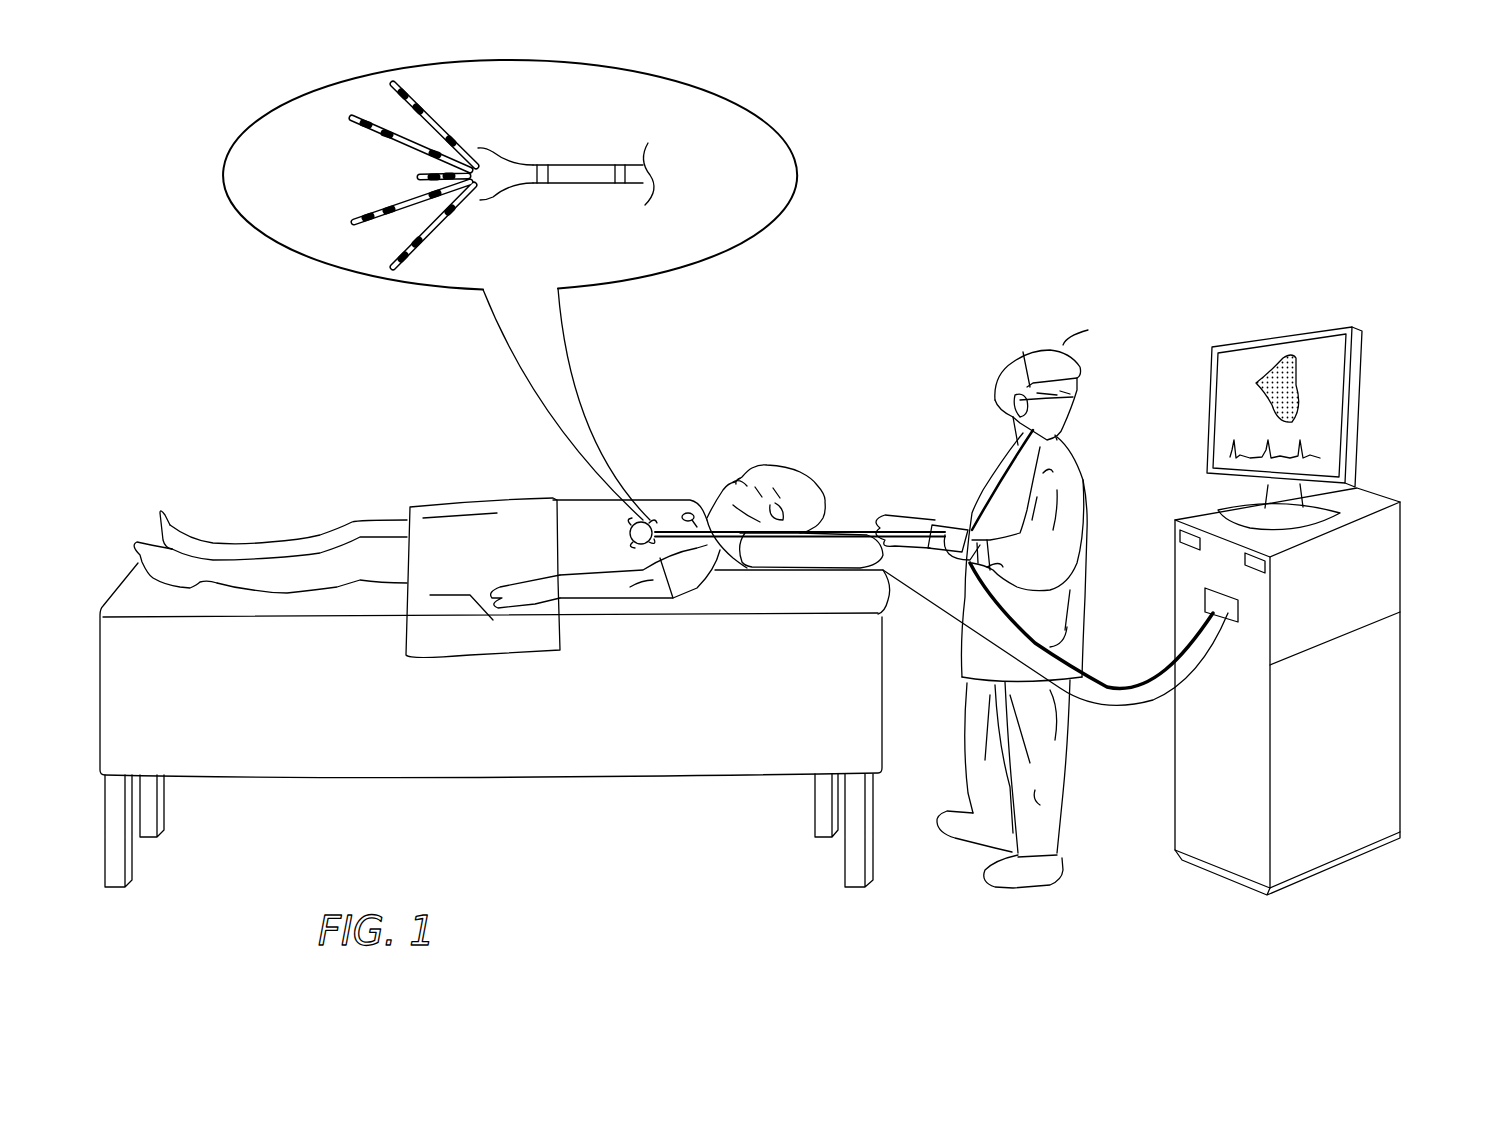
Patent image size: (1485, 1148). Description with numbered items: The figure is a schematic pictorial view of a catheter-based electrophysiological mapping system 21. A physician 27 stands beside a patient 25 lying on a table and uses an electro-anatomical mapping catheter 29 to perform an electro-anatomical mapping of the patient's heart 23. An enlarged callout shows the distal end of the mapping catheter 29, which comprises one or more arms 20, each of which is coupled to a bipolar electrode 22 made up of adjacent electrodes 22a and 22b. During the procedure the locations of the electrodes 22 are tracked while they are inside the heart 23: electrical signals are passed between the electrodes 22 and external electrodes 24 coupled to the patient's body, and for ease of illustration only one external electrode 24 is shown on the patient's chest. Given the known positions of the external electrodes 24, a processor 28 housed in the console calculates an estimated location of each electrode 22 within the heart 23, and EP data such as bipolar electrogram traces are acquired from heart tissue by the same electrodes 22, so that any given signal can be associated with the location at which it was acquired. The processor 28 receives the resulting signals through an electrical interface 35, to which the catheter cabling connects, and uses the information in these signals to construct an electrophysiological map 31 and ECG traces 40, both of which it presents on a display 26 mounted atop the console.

The arm 20 is at (433, 112).
The catheter-based electrophysiological mapping system 21 is at (289, 404).
The bipolar electrode 22 is at (412, 176).
The electrode 22a is at (358, 217).
The electrode 22b is at (377, 207).
The heart 23 is at (622, 522).
The external electrode 24 is at (688, 512).
The patient 25 is at (808, 466).
The display 26 is at (1321, 402).
The physician 27 is at (1065, 345).
The processor 28 is at (1402, 550).
The electro-anatomical mapping catheter 29 is at (875, 520).
The electrophysiological map 31 is at (1290, 355).
The electrical interface 35 is at (1230, 622).
The ECG traces 40 is at (1305, 450).